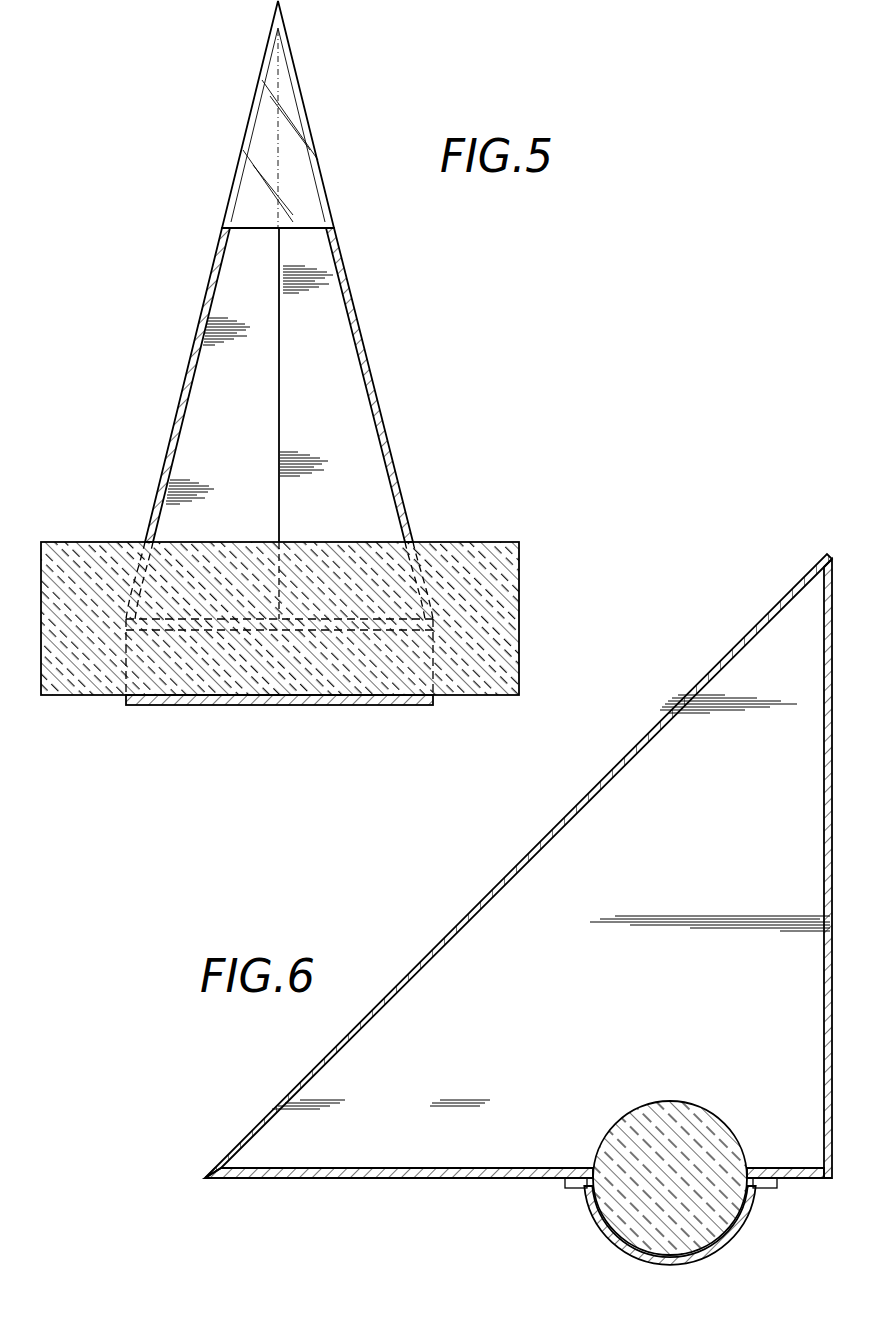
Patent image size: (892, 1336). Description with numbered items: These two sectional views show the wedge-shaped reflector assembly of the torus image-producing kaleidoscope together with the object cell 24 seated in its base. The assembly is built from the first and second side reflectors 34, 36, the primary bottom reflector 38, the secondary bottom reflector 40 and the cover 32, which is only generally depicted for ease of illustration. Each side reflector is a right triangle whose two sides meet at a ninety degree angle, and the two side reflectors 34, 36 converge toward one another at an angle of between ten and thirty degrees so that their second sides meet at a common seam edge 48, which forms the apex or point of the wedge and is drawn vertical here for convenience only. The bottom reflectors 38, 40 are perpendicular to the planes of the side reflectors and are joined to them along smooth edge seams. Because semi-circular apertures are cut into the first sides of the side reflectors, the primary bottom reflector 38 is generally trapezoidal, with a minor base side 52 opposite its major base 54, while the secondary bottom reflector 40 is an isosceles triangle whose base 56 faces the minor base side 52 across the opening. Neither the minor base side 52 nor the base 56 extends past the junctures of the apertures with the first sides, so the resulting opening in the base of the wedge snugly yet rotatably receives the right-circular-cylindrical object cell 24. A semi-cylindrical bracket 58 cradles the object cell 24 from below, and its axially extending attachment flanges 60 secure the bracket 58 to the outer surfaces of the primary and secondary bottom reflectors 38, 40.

In FIG. 5, the object cell 24 is at (483, 527).
In FIG. 6, the object cell 24 is at (714, 1096).
In FIG. 5, the cover 32 is at (311, 192).
In FIG. 6, the cover 32 is at (447, 932).
In FIG. 5, the first side reflector 34 is at (380, 408).
In FIG. 5, the second side reflector 36 is at (176, 418).
In FIG. 6, the second side reflector 36 is at (611, 1009).
In FIG. 6, the primary bottom reflector 38 is at (375, 1180).
In FIG. 6, the secondary bottom reflector 40 is at (816, 1179).
In FIG. 5, the seam edge 48 is at (279, 422).
In FIG. 6, the minor base side 52 is at (590, 1152).
In FIG. 6, the major base 54 is at (205, 1179).
In FIG. 6, the base 56 is at (750, 1152).
In FIG. 5, the semi-cylindrical bracket 58 is at (271, 706).
In FIG. 6, the semi-cylindrical bracket 58 is at (600, 1242).
In FIG. 6, the attachment flanges 60 is at (566, 1189).